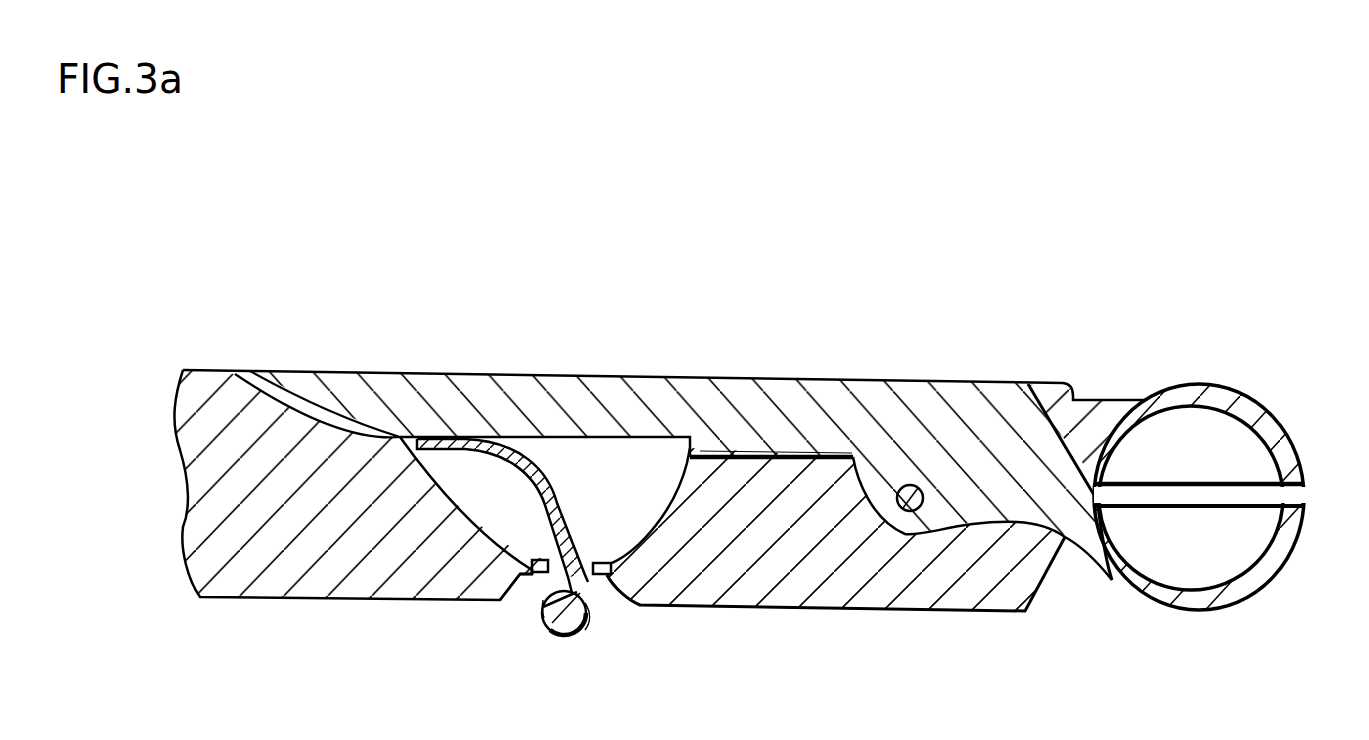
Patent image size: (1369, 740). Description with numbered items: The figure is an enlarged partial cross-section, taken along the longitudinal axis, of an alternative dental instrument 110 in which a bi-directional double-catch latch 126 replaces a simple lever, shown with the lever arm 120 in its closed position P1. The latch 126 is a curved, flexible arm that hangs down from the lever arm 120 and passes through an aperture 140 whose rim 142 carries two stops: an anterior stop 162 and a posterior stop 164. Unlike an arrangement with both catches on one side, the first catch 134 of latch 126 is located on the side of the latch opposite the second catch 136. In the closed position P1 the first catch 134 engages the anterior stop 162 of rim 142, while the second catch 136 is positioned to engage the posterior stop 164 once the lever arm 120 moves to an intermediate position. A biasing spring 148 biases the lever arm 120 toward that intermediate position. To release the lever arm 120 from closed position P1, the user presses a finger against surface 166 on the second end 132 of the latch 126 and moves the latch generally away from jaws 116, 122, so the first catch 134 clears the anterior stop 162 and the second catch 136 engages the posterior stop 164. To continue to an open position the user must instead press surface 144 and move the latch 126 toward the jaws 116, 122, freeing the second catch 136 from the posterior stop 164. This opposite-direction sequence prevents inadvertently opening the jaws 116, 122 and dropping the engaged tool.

The instrument 110 is at (437, 167).
The jaw 116 is at (1263, 413).
The lever arm 120 is at (538, 375).
The jaw 122 is at (1240, 587).
The bi-directional double-catch latch 126 is at (573, 473).
The second end 132 is at (569, 636).
The first catch 134 is at (608, 583).
The second catch 136 is at (543, 614).
The aperture 140 is at (544, 592).
The rim 142 is at (527, 580).
The surface 144 is at (548, 608).
The biasing spring 148 is at (752, 456).
The anterior stop 162 is at (602, 563).
The posterior stop 164 is at (540, 560).
The surface 166 is at (590, 620).
The closed position P1 is at (807, 264).